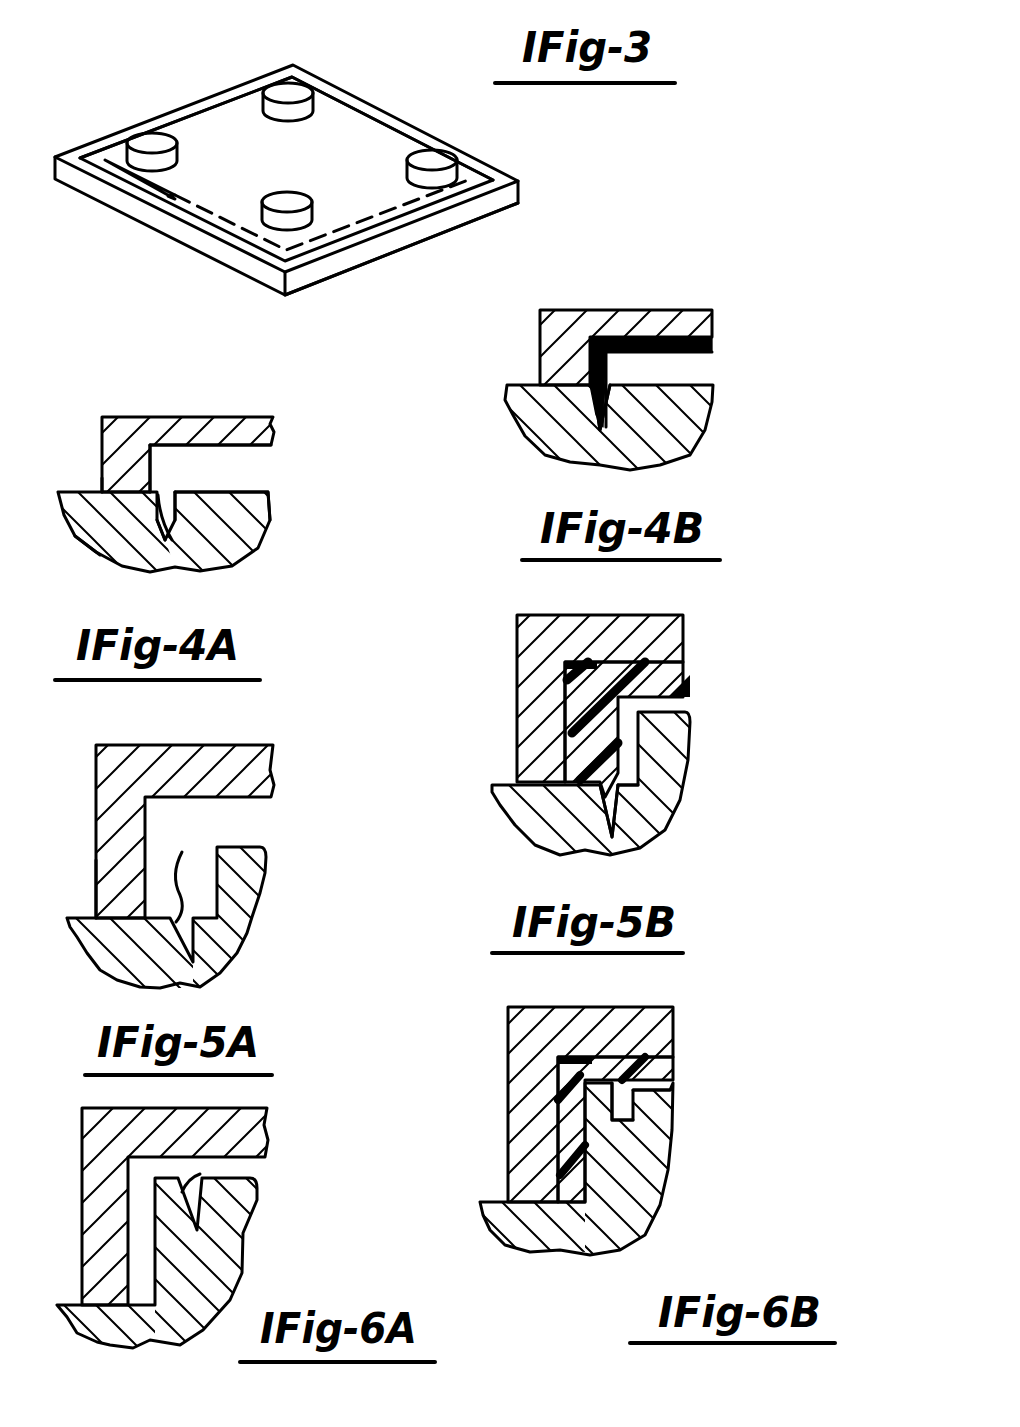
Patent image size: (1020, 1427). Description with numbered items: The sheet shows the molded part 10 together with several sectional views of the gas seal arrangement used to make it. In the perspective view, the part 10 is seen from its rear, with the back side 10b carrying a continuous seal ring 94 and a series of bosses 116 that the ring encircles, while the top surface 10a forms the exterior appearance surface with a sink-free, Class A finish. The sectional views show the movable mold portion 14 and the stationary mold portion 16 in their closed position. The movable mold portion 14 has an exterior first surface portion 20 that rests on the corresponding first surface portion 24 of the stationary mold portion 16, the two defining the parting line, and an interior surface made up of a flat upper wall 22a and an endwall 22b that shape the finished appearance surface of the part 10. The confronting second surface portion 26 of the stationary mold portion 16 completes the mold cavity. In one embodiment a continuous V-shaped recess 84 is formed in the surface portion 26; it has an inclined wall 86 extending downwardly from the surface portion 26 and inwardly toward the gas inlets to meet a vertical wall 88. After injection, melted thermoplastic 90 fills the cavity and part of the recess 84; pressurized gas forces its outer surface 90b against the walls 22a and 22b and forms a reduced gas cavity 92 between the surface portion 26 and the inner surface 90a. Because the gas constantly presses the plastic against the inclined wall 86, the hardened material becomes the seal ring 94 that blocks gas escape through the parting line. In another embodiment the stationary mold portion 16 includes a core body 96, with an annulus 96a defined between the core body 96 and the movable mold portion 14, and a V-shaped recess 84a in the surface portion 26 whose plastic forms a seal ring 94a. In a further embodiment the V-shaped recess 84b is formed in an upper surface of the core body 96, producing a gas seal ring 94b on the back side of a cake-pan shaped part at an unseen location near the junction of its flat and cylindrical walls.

In FIG. 3, the part 10 is at (118, 253).
In FIG. 3, the top surface 10a is at (410, 247).
In FIG. 3, the back side 10b is at (348, 130).
In FIG. 3, the seal ring 94 is at (117, 170).
In FIG. 4B, the seal ring 94 is at (560, 447).
In FIG. 3, the bosses 116 is at (323, 92).
In FIG. 4A, the movable mold portion 14 is at (102, 446).
In FIG. 5A, the movable mold portion 14 is at (96, 800).
In FIG. 5B, the movable mold portion 14 is at (600, 698).
In FIG. 6A, the movable mold portion 14 is at (90, 1180).
In FIG. 6B, the movable mold portion 14 is at (590, 1104).
In FIG. 4A, the stationary mold portion 16 is at (70, 530).
In FIG. 4A, the first surface portion 20 is at (100, 554).
In FIG. 4A, the flat upper wall 22a is at (222, 445).
In FIG. 4A, the endwall 22b is at (166, 440).
In FIG. 4A, the first surface portion 24 is at (108, 485).
In FIG. 4A, the second surface portion 26 is at (255, 492).
In FIG. 4A, the V-shaped recess 84 is at (163, 506).
In FIG. 4A, the inclined wall 86 is at (158, 532).
In FIG. 4A, the vertical wall 88 is at (210, 549).
In FIG. 4B, the thermoplastic 90 is at (660, 344).
In FIG. 5B, the thermoplastic 90 is at (627, 729).
In FIG. 6B, the thermoplastic 90 is at (615, 1129).
In FIG. 4B, the inner surface 90a is at (698, 356).
In FIG. 4B, the outer surface 90b is at (703, 340).
In FIG. 4B, the gas cavity 92 is at (690, 376).
In FIG. 5A, the core body 96 is at (250, 881).
In FIG. 5B, the core body 96 is at (591, 783).
In FIG. 6A, the core body 96 is at (240, 1209).
In FIG. 6B, the core body 96 is at (576, 1169).
In FIG. 5A, the annulus 96a is at (145, 871).
In FIG. 5A, the V-shaped recess 84a is at (188, 849).
In FIG. 5B, the V-shaped recess 84a is at (617, 817).
In FIG. 5B, the seal ring 94a is at (633, 792).
In FIG. 6A, the V-shaped recess 84b is at (200, 1174).
In FIG. 6B, the V-shaped recess 84b is at (634, 1123).
In FIG. 6B, the gas seal ring 94b is at (638, 1090).